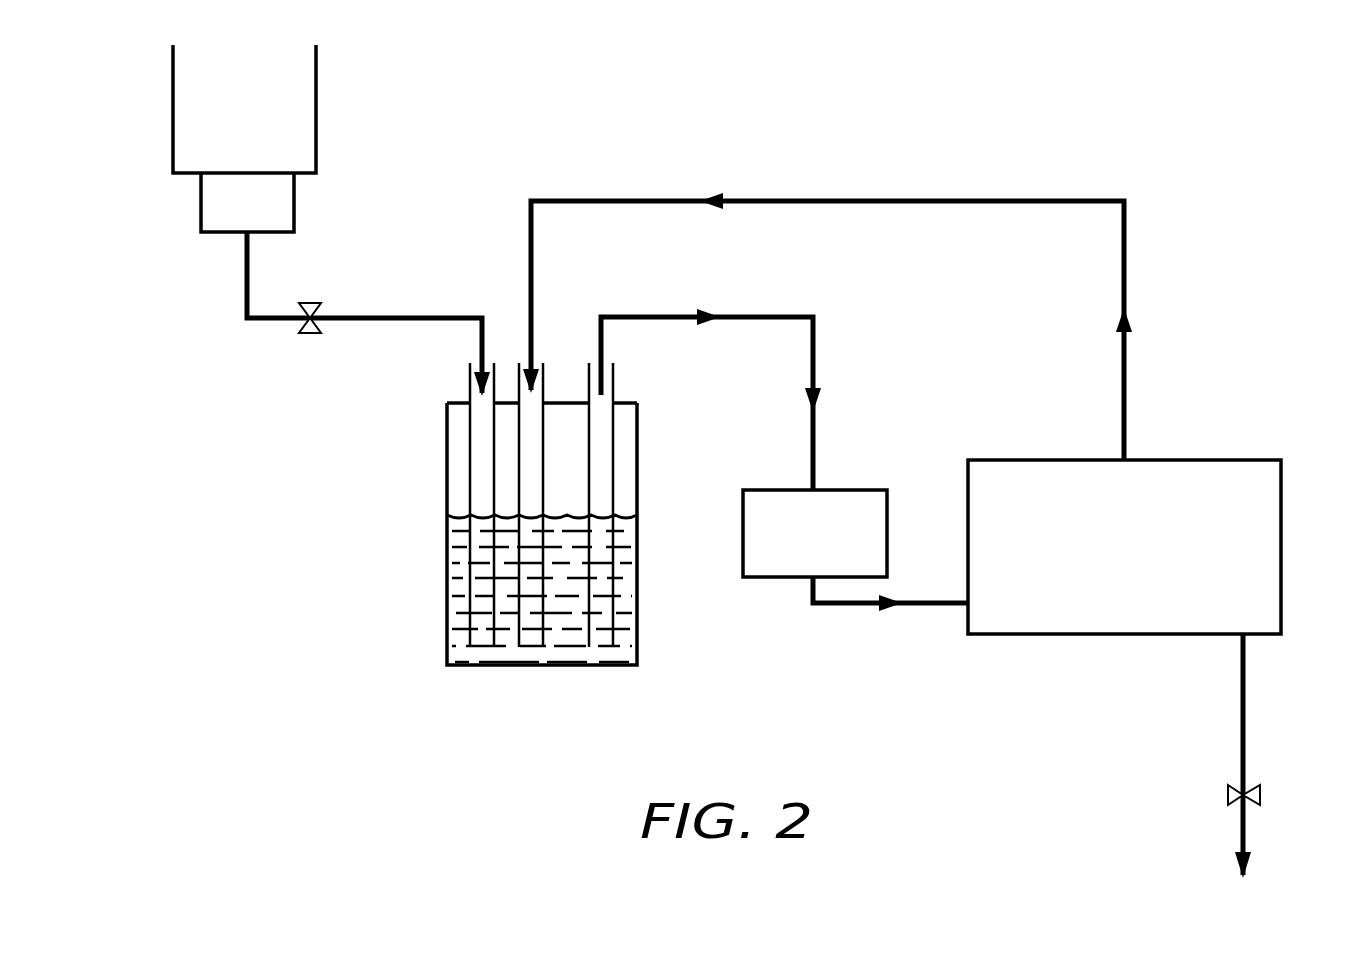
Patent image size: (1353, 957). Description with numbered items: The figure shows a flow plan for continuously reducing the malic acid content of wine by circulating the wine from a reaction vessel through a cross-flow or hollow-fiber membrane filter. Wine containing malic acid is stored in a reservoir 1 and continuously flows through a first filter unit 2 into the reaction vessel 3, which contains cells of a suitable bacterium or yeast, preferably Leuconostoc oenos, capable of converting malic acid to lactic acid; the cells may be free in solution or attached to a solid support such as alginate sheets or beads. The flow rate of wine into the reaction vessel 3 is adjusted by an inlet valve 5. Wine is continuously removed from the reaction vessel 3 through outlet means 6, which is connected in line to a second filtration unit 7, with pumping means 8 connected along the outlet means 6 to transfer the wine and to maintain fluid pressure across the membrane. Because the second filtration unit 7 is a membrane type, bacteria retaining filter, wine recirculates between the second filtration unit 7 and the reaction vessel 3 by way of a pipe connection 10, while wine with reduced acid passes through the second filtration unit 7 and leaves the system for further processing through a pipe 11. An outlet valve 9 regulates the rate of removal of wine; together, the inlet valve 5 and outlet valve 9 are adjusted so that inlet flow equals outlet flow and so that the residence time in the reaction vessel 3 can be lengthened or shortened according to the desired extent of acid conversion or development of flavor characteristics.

The reservoir 1 is at (312, 138).
The first filter unit 2 is at (296, 218).
The reaction vessel 3 is at (447, 572).
The inlet valve 5 is at (310, 340).
The outlet means 6 is at (742, 322).
The second filtration unit 7 is at (1065, 620).
The pumping means 8 is at (785, 578).
The outlet valve 9 is at (1263, 798).
The pipe connection 10 is at (890, 190).
The pipe 11 is at (1245, 740).